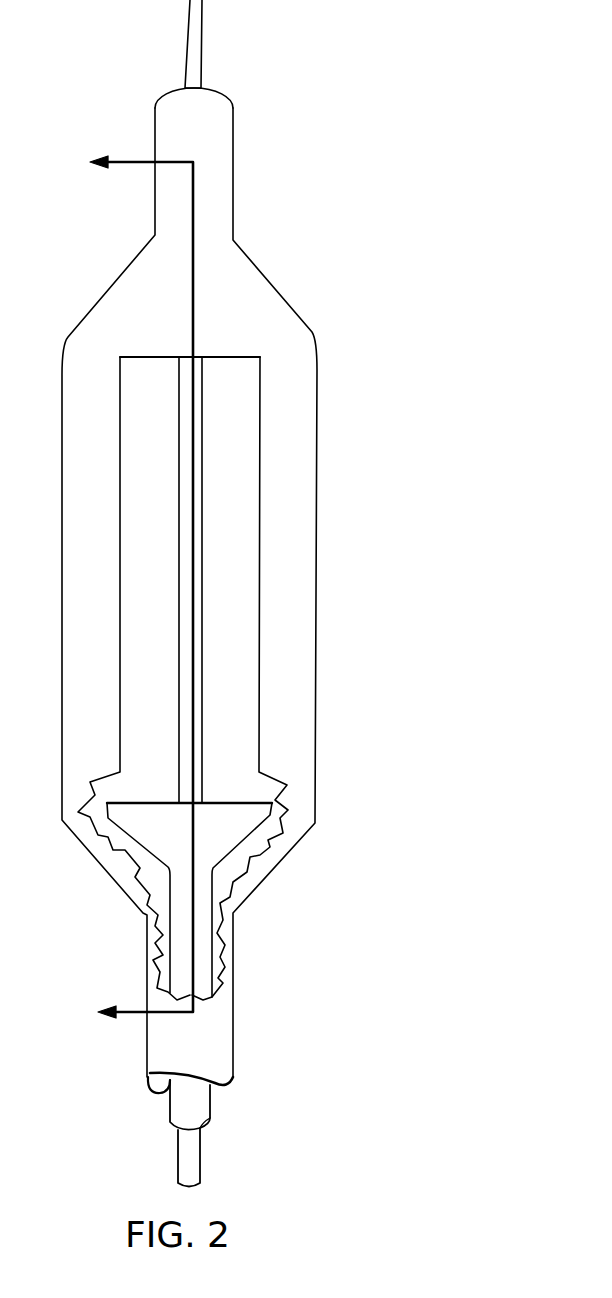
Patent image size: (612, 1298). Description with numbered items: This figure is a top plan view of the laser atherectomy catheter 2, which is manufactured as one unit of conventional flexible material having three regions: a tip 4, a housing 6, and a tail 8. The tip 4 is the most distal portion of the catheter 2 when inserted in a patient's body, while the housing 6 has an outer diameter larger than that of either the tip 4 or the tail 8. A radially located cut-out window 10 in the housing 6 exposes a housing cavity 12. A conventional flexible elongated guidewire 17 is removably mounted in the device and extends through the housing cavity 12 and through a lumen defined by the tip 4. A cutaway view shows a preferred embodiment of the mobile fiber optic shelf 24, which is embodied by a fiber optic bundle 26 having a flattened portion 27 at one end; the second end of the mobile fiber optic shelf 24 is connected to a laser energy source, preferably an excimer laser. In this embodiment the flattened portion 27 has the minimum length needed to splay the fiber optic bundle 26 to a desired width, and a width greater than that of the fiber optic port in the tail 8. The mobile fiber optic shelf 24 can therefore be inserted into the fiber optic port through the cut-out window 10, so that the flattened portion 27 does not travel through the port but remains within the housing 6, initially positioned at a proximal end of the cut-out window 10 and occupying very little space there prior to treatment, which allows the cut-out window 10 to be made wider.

The catheter 2 is at (327, 567).
The tip 4 is at (233, 118).
The housing 6 is at (67, 474).
The tail 8 is at (157, 1058).
The cut-out window 10 is at (262, 424).
The housing cavity 12 is at (244, 574).
The guidewire 17 is at (205, 37).
The mobile fiber optic shelf 24 is at (225, 865).
The fiber optic bundle 26 is at (178, 957).
The flattened portion 27 is at (231, 842).